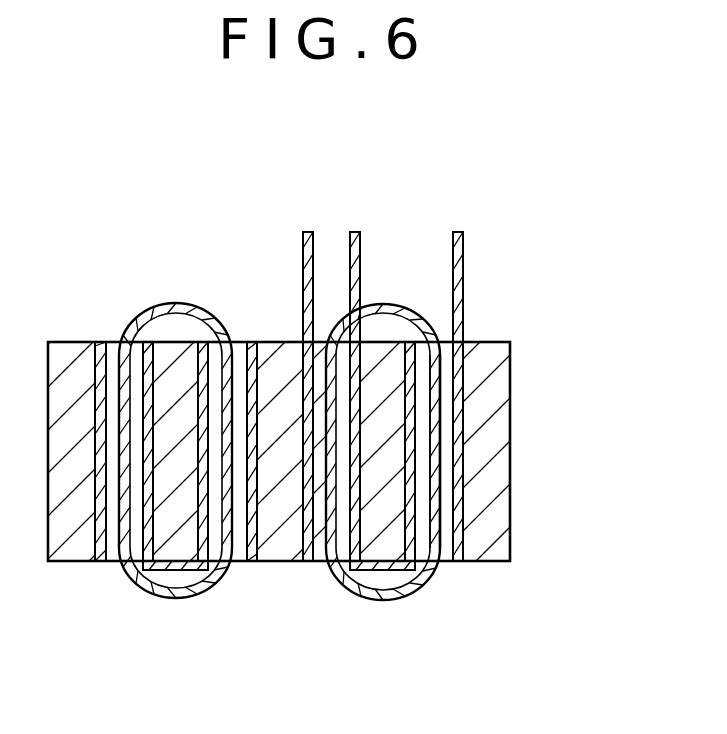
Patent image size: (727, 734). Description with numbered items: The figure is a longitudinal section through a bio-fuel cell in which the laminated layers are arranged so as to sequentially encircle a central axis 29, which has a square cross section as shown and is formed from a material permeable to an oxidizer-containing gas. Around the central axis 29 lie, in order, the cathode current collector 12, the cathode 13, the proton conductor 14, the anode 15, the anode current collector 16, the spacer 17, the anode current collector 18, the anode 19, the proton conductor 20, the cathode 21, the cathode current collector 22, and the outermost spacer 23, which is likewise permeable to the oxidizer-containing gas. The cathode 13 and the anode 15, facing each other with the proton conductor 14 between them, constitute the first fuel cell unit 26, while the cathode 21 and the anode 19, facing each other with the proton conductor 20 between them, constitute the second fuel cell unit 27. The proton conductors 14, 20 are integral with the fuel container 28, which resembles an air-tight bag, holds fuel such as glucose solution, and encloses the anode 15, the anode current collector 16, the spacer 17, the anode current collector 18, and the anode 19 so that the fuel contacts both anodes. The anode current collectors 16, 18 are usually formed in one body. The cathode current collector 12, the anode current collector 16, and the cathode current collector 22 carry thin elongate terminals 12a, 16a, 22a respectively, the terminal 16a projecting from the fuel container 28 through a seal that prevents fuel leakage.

The cathode current collector 12 is at (300, 560).
The terminal 12a is at (302, 268).
The cathode 13 is at (313, 560).
The proton conductor 14 is at (420, 330).
The anode 15 is at (320, 558).
The anode current collector 16 is at (345, 415).
The terminal 16a is at (350, 250).
The spacer 17 is at (383, 548).
The anode current collector 18 is at (412, 448).
The anode 19 is at (421, 568).
The proton conductor 20 is at (433, 478).
The cathode 21 is at (443, 562).
The cathode current collector 22 is at (457, 560).
The terminal 22a is at (464, 250).
The spacer 23 is at (497, 553).
The first fuel cell unit 26 is at (343, 370).
The second fuel cell unit 27 is at (447, 513).
The fuel container 28 is at (390, 304).
The central axis 29 is at (267, 560).